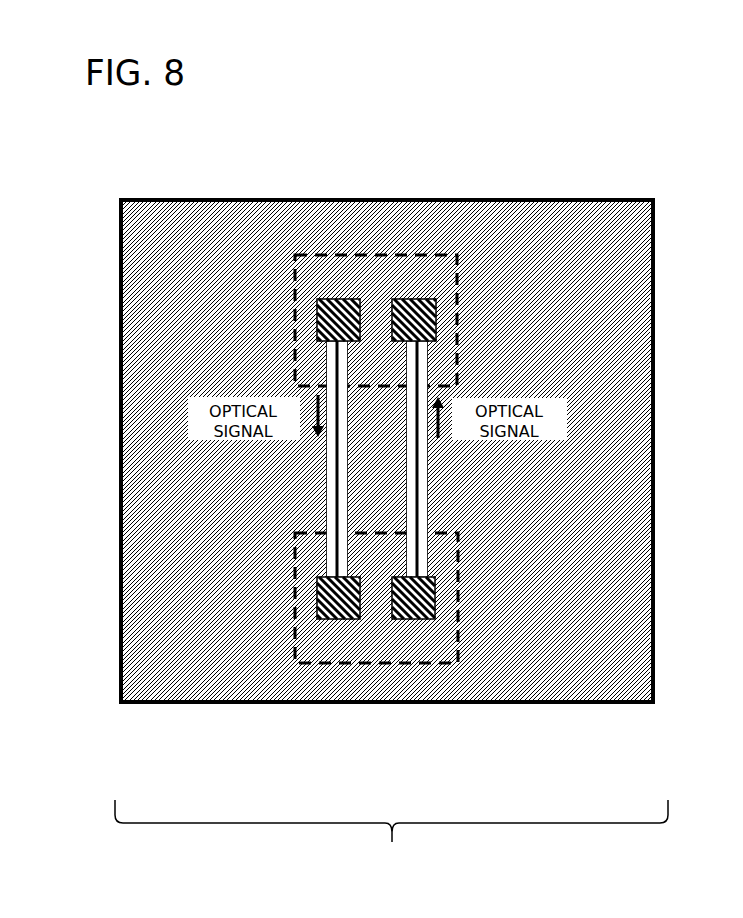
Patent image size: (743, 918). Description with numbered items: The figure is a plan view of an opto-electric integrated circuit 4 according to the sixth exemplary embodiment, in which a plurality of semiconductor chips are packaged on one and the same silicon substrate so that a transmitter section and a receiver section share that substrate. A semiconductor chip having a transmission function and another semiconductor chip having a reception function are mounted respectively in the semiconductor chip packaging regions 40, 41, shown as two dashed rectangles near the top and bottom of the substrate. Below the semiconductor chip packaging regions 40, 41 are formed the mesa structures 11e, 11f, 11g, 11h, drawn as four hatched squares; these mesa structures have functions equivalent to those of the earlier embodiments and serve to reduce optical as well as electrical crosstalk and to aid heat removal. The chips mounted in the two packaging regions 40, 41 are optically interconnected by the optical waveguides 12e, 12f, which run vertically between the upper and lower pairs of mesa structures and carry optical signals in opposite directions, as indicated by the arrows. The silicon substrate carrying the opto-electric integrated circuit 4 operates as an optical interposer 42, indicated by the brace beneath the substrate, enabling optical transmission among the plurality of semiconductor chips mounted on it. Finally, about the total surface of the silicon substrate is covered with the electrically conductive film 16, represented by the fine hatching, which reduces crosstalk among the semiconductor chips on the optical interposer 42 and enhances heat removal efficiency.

The opto-electric integrated circuit 4 is at (652, 130).
The electrically conductive film 16 is at (615, 268).
The semiconductor chip packaging region 40 is at (290, 342).
The semiconductor chip packaging region 41 is at (290, 638).
The mesa structure 11e is at (335, 316).
The mesa structure 11f is at (410, 316).
The mesa structure 11g is at (335, 604).
The mesa structure 11h is at (410, 604).
The optical waveguide 12e is at (325, 501).
The optical waveguide 12f is at (428, 500).
The optical interposer 42 is at (391, 834).